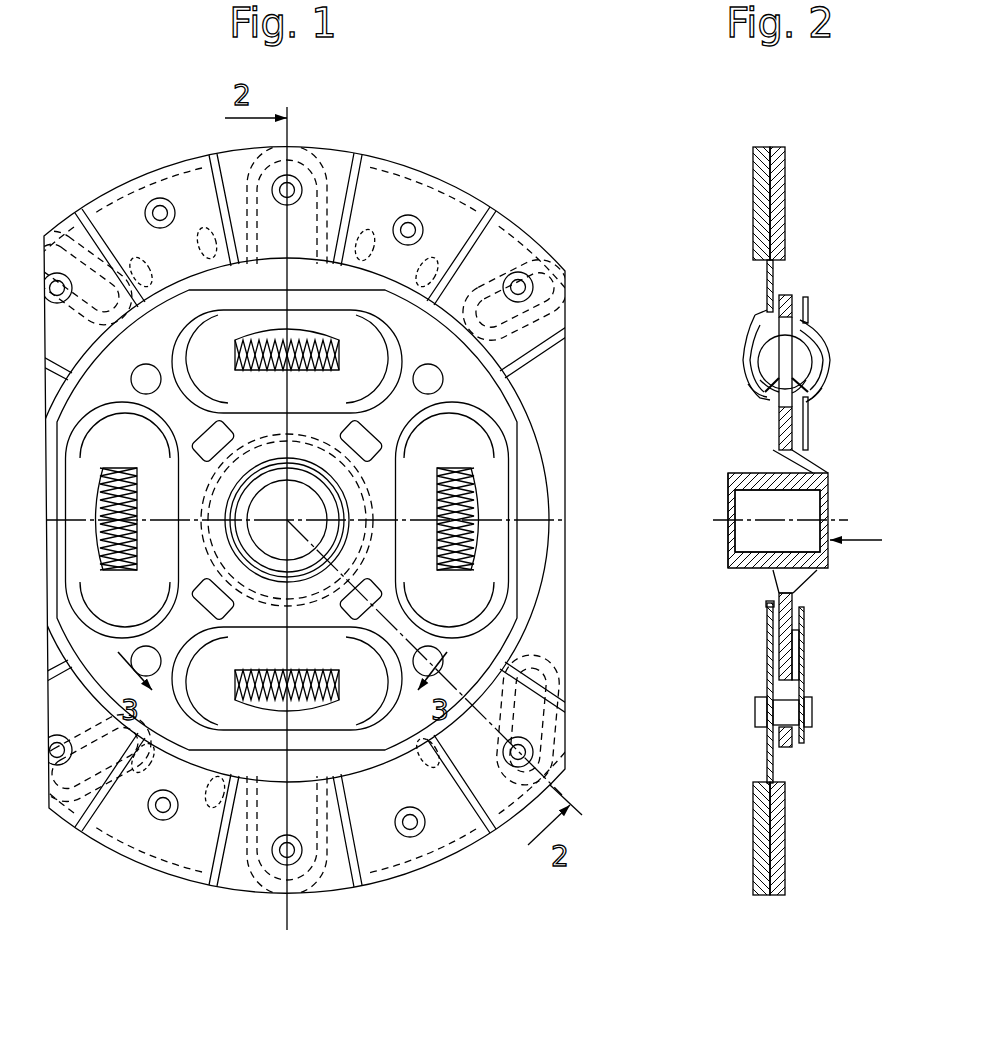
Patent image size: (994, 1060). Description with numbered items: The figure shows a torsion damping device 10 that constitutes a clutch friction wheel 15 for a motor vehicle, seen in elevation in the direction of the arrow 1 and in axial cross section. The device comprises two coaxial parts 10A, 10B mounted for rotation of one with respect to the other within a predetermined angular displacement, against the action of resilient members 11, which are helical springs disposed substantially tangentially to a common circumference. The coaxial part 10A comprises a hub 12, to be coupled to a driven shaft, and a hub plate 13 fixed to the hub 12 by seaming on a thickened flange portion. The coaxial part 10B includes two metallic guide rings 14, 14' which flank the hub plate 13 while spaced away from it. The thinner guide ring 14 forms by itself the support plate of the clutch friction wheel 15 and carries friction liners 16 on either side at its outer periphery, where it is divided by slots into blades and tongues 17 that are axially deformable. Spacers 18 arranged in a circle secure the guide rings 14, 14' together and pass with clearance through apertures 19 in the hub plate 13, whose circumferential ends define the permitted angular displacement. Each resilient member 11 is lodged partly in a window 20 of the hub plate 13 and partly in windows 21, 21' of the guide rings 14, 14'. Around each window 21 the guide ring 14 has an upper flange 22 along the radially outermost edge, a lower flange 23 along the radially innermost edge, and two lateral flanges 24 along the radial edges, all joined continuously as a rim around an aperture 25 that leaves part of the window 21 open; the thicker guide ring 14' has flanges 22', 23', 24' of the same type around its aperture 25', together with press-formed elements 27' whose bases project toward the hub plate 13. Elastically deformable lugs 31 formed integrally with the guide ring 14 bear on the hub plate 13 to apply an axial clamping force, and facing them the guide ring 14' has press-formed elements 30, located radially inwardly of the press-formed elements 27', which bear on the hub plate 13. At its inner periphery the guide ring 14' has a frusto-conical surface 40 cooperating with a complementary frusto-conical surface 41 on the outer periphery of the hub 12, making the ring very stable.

In FIG. 2, the arrow 1 is at (856, 524).
In FIG. 1, the torsion damping device 10 is at (333, 140).
In FIG. 2, the torsion damping device 10 is at (797, 148).
In FIG. 2, the coaxial part 10A is at (825, 473).
In FIG. 1, the coaxial part 10B is at (378, 147).
In FIG. 2, the coaxial part 10B is at (815, 320).
In FIG. 1, the resilient members 11 is at (290, 345).
In FIG. 2, the resilient members 11 is at (745, 355).
In FIG. 1, the hub 12 is at (277, 584).
In FIG. 2, the hub 12 is at (728, 568).
In FIG. 2, the hub plate 13 is at (795, 748).
In FIG. 2, the guide ring 14 is at (721, 693).
In FIG. 1, the guide ring 14' is at (287, 520).
In FIG. 2, the guide ring 14' is at (835, 675).
In FIG. 1, the clutch friction wheel 15 is at (183, 152).
In FIG. 2, the clutch friction wheel 15 is at (740, 897).
In FIG. 1, the friction liners 16 is at (182, 197).
In FIG. 2, the friction liners 16 is at (753, 838).
In FIG. 1, the blades and tongues 17 is at (125, 190).
In FIG. 2, the blades and tongues 17 is at (770, 147).
In FIG. 1, the spacers 18 is at (146, 376).
In FIG. 2, the spacers 18 is at (812, 712).
In FIG. 2, the apertures 19 is at (770, 712).
In FIG. 2, the windows 20 is at (795, 318).
In FIG. 2, the windows 21 is at (724, 404).
In FIG. 2, the windows 21' is at (838, 379).
In FIG. 2, the upper flange 22 is at (718, 303).
In FIG. 2, the upper flange 22' is at (842, 329).
In FIG. 2, the lower flange 23 is at (718, 396).
In FIG. 2, the lower flange 23' is at (845, 414).
In FIG. 2, the lateral flanges 24 is at (717, 351).
In FIG. 2, the lateral flanges 24' is at (842, 360).
In FIG. 1, the aperture 25 is at (287, 520).
In FIG. 2, the aperture 25 is at (724, 376).
In FIG. 2, the aperture 25' is at (838, 398).
In FIG. 1, the press-formed elements 27' is at (315, 521).
In FIG. 1, the press-formed elements 30 is at (200, 430).
In FIG. 2, the press-formed elements 30 is at (800, 638).
In FIG. 2, the elastically deformable lugs 31 is at (766, 604).
In FIG. 2, the frusto-conical surface 40 is at (795, 585).
In FIG. 2, the frusto-conical surface 41 is at (735, 540).